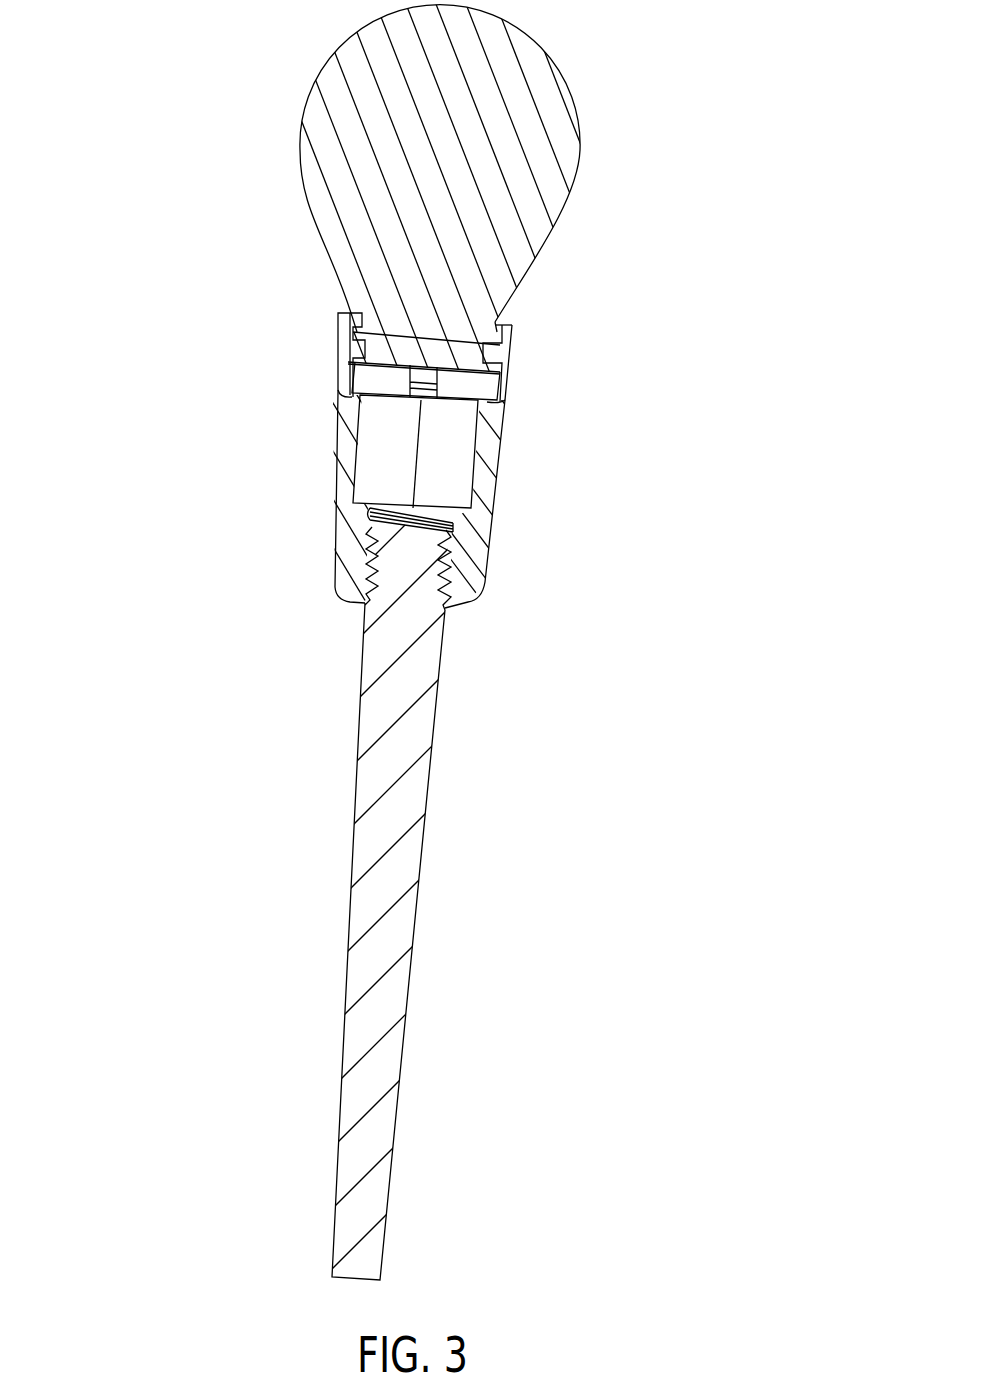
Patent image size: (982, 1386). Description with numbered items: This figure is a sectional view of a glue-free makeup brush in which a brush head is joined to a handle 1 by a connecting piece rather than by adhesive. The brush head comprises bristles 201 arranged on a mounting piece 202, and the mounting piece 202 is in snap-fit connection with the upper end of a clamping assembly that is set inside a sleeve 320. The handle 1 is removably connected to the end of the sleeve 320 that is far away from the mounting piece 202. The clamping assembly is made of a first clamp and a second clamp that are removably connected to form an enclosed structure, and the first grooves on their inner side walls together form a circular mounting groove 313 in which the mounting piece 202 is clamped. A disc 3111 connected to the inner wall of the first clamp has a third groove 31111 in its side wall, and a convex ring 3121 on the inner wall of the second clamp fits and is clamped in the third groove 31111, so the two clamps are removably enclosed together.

The bristles 201 is at (447, 143).
The mounting piece 202 is at (510, 326).
The circular mounting groove 313 is at (340, 317).
The disc 3111 is at (390, 350).
The third groove 31111 is at (490, 353).
The convex ring 3121 is at (508, 390).
The sleeve 320 is at (342, 485).
The handle 1 is at (380, 842).